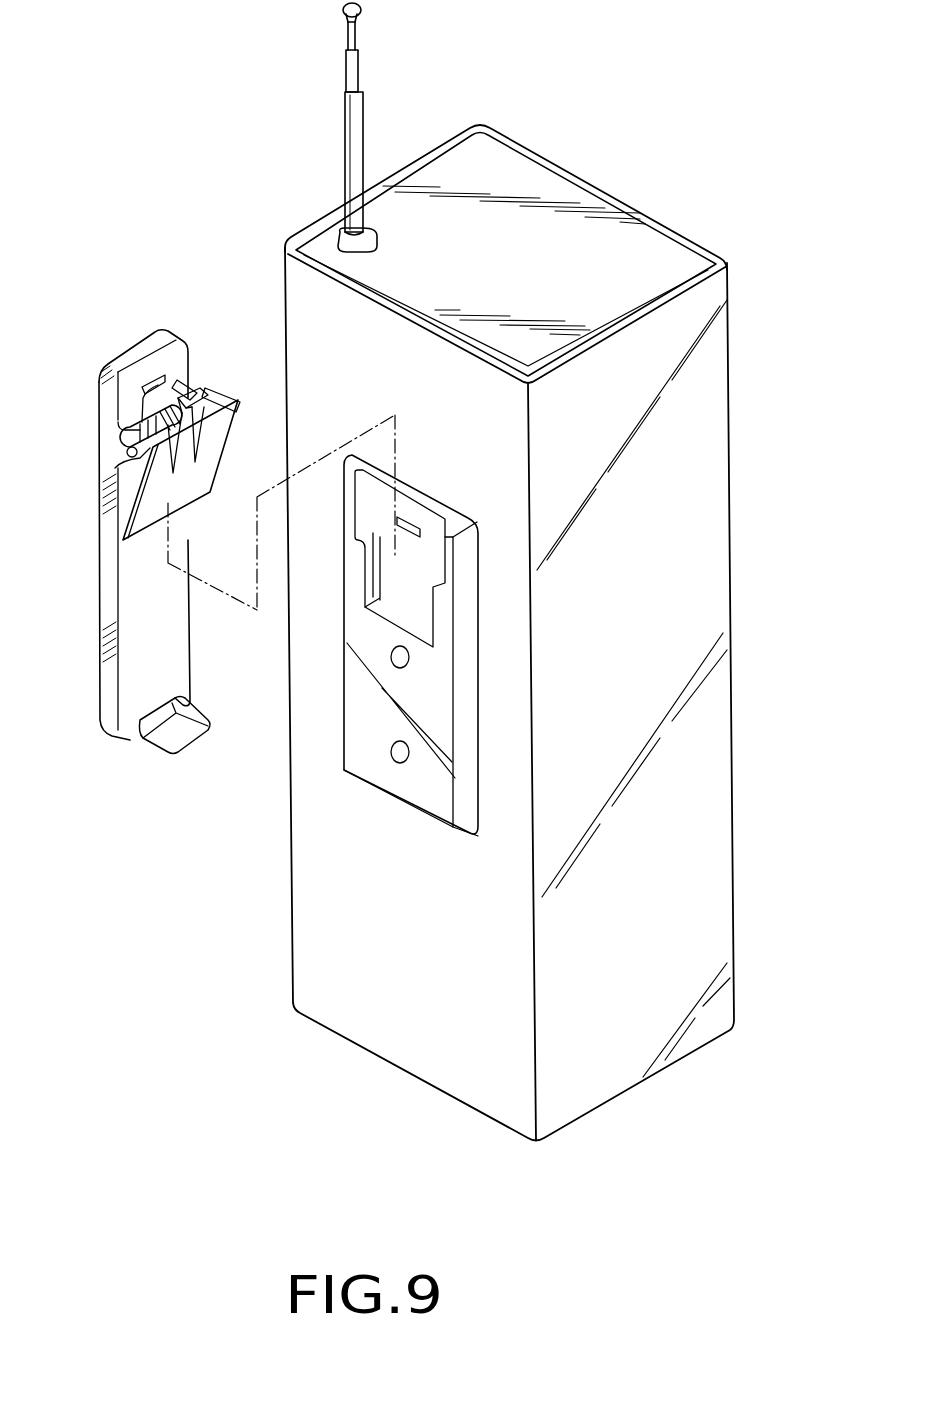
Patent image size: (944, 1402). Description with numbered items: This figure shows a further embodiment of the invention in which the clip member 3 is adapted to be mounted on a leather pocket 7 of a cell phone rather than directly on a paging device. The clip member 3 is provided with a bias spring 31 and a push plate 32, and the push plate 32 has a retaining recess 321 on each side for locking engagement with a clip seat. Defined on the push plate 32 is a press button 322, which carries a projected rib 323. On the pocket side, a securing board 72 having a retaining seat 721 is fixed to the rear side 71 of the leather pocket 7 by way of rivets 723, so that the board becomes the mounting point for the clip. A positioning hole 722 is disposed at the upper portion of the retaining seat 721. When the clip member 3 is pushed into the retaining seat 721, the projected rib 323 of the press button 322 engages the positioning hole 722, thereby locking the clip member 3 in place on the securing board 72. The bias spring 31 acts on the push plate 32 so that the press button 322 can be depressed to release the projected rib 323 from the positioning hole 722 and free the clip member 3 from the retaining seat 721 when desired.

The clip member 3 is at (105, 654).
The bias spring 31 is at (122, 437).
The push plate 32 is at (192, 495).
The retaining recess 321 is at (225, 400).
The press button 322 is at (205, 392).
The projected rib 323 is at (203, 446).
The leather pocket 7 is at (712, 577).
The rear side 71 is at (318, 938).
The securing board 72 is at (363, 745).
The retaining seat 721 is at (403, 577).
The positioning hole 722 is at (402, 525).
The rivets 723 is at (393, 668).